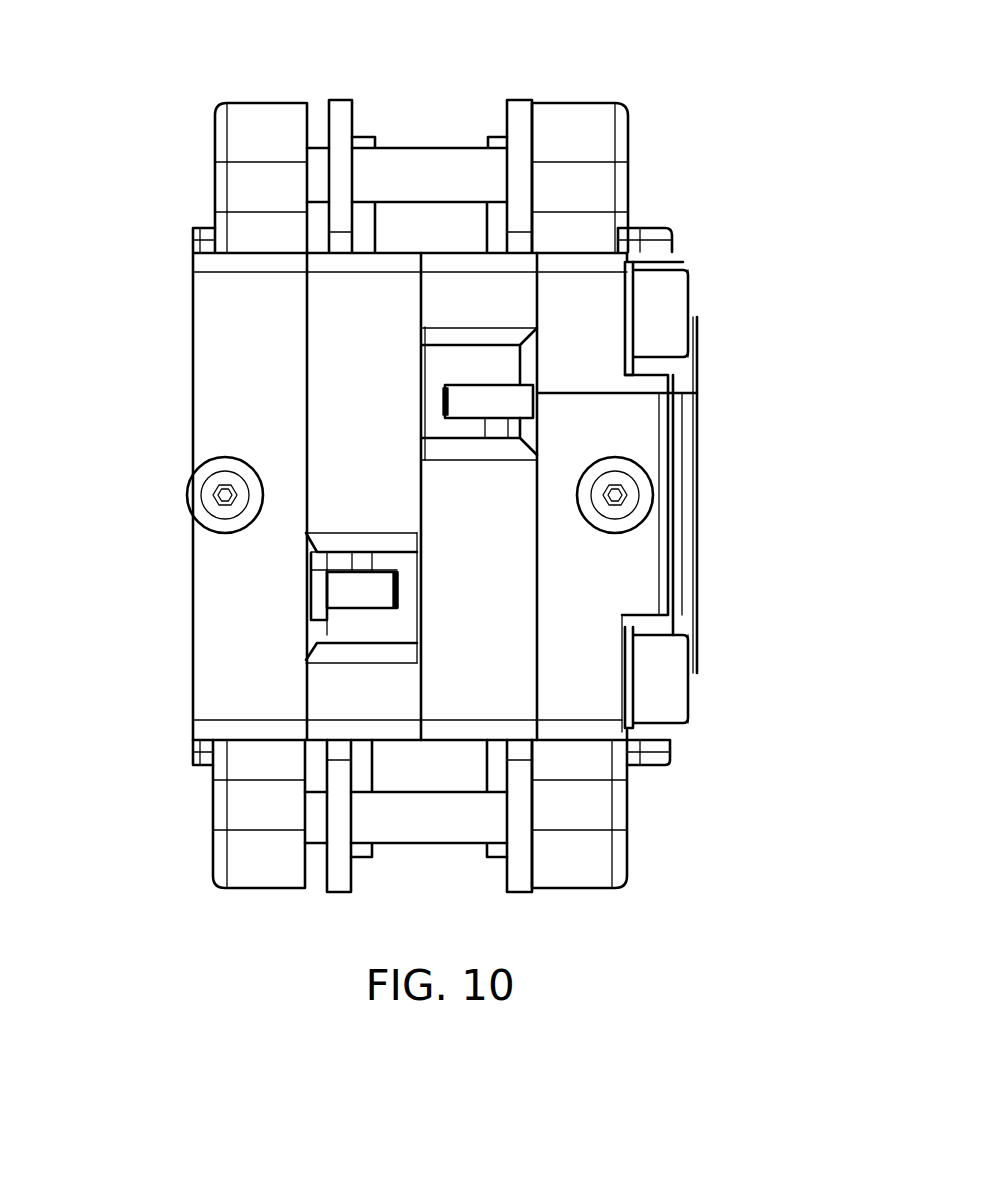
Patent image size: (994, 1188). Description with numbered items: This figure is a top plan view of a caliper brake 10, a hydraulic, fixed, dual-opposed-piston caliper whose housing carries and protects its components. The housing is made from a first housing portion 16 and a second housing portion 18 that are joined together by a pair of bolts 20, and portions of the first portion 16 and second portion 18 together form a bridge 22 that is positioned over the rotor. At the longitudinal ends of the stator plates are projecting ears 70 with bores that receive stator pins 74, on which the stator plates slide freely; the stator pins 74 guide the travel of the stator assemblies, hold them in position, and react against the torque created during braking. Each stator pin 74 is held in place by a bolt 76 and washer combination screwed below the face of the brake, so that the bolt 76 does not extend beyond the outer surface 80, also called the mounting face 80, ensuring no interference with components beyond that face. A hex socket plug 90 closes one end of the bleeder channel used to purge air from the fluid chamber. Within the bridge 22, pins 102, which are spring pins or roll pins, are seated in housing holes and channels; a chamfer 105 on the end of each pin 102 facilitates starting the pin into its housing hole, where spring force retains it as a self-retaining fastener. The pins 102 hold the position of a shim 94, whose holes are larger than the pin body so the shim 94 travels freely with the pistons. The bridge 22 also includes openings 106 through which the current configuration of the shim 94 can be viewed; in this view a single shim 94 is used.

The caliper brake 10 is at (195, 960).
The first housing portion 16 is at (566, 297).
The second housing portion 18 is at (225, 320).
The bolts 20 is at (683, 292).
The bridge 22 is at (441, 510).
The projecting ears 70 is at (524, 103).
The stator pins 74 is at (457, 160).
The bolt 76 is at (214, 178).
The outer surface 80 is at (193, 372).
The hex socket plug 90 is at (208, 494).
The shim 94 is at (323, 593).
The pins 102 is at (367, 588).
The chamfer 105 is at (398, 580).
The openings 106 is at (375, 631).